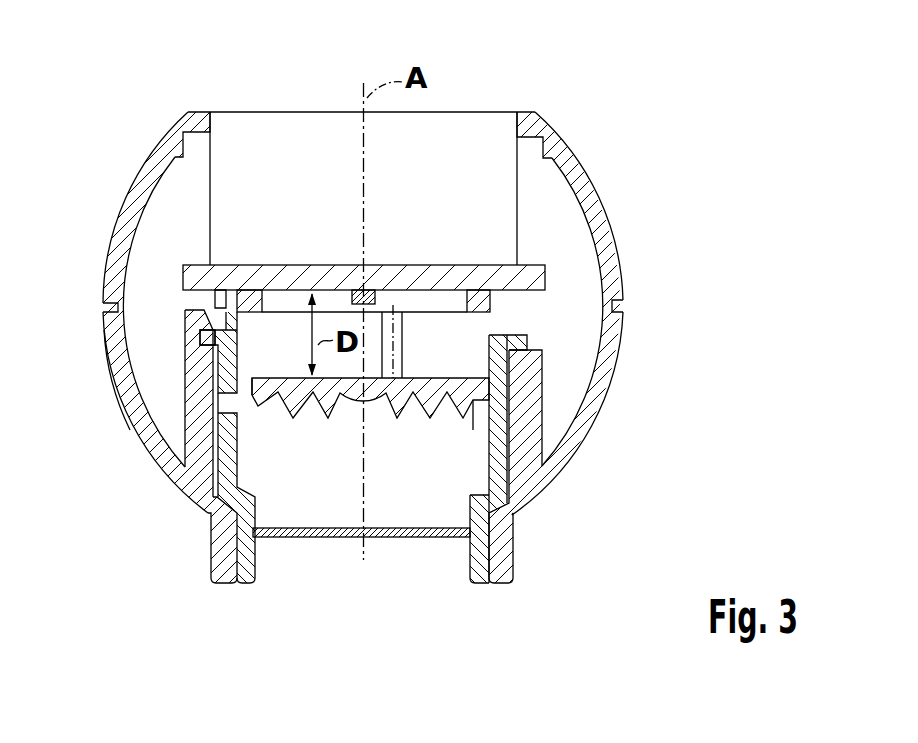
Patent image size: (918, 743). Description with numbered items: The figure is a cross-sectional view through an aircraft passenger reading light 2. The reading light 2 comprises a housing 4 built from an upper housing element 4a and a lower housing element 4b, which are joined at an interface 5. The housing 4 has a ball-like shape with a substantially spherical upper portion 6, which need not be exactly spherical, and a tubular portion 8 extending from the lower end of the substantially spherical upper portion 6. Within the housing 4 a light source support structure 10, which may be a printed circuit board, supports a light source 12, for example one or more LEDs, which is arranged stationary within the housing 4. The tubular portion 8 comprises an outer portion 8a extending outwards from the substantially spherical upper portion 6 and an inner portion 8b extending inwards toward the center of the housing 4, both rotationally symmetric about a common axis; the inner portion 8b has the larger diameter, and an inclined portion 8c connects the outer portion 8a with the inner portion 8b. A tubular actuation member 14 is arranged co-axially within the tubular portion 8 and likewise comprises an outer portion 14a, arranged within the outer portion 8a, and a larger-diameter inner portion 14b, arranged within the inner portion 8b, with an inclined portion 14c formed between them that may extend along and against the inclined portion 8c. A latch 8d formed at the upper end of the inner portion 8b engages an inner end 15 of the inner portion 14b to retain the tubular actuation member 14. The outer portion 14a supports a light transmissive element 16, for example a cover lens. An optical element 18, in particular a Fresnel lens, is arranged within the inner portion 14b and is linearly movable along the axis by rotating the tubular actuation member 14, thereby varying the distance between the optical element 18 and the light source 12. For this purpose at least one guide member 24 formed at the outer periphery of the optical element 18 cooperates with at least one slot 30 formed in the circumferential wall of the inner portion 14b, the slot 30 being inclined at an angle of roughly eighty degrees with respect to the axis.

The aircraft passenger reading light 2 is at (578, 118).
The housing 4 is at (356, 339).
The upper housing element 4a is at (173, 135).
The lower housing element 4b is at (155, 452).
The interface 5 is at (96, 294).
The substantially spherical upper portion 6 is at (103, 406).
The tubular portion 8 is at (365, 430).
The outer portion 8a is at (504, 549).
The inner portion 8b is at (192, 378).
The inclined portion 8c is at (200, 513).
The latch 8d is at (175, 308).
The light source support structure 10 is at (528, 272).
The light source 12 is at (380, 266).
The tubular actuation member 14 is at (363, 465).
The outer portion 14a is at (474, 556).
The inner portion 14b is at (232, 368).
The inclined portion 14c is at (250, 495).
The inner end 15 is at (211, 332).
The light transmissive element 16 is at (398, 540).
The optical element 18 is at (342, 395).
The guide member 24 is at (495, 398).
The slot 30 is at (247, 412).